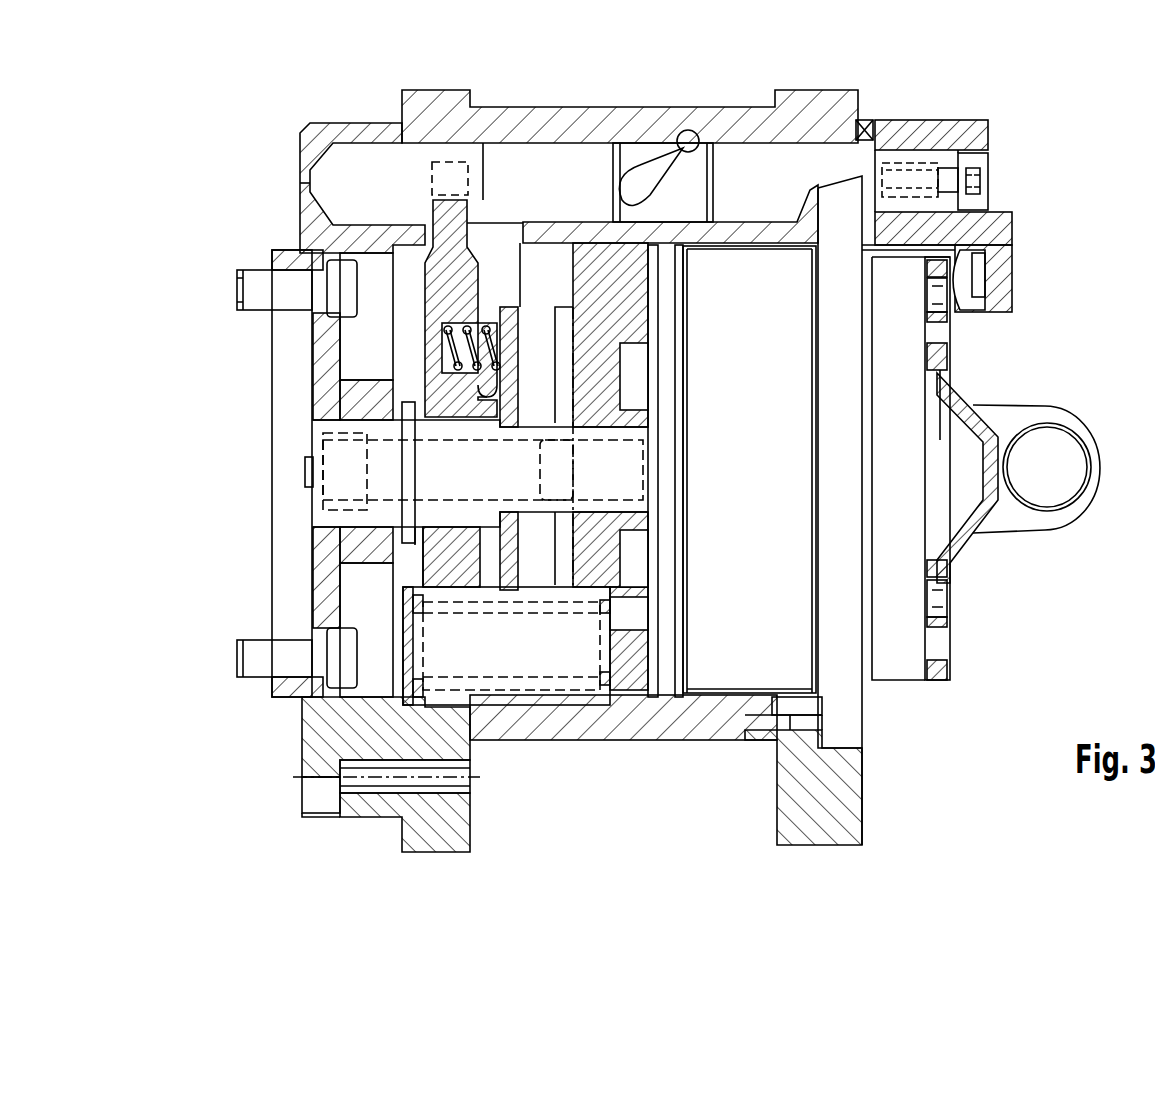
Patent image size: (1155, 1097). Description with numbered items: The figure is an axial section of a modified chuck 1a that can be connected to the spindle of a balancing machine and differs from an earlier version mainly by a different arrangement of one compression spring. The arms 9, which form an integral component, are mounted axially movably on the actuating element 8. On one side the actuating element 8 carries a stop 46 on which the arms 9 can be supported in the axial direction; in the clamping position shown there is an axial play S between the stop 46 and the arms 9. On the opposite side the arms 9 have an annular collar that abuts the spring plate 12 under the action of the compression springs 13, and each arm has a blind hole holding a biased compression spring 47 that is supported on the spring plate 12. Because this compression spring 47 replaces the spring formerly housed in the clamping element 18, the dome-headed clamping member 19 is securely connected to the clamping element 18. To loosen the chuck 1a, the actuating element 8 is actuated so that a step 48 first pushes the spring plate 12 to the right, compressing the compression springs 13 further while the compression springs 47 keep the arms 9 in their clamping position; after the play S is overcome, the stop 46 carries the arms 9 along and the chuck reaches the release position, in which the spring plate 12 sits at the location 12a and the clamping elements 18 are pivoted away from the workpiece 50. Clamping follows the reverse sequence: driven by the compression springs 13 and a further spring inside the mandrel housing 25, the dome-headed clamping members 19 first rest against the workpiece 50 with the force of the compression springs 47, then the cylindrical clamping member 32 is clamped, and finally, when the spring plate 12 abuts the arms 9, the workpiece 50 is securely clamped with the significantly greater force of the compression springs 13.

The chuck 1a is at (271, 196).
The compression spring 47 is at (487, 327).
The location of the spring plate in the release position 12a is at (562, 307).
The clamping element 18 is at (970, 133).
The dome-headed clamping member 19 is at (965, 253).
The cylindrical clamping member 32 is at (938, 372).
The workpiece 50 is at (978, 425).
The arms 9 is at (432, 340).
The actuating element 8 is at (382, 437).
The stop 46 is at (410, 515).
The axial play S is at (417, 535).
The step 48 is at (515, 507).
The compression springs 13 is at (532, 677).
The mandrel housing 25 is at (723, 653).
The spring plate 12 is at (422, 700).